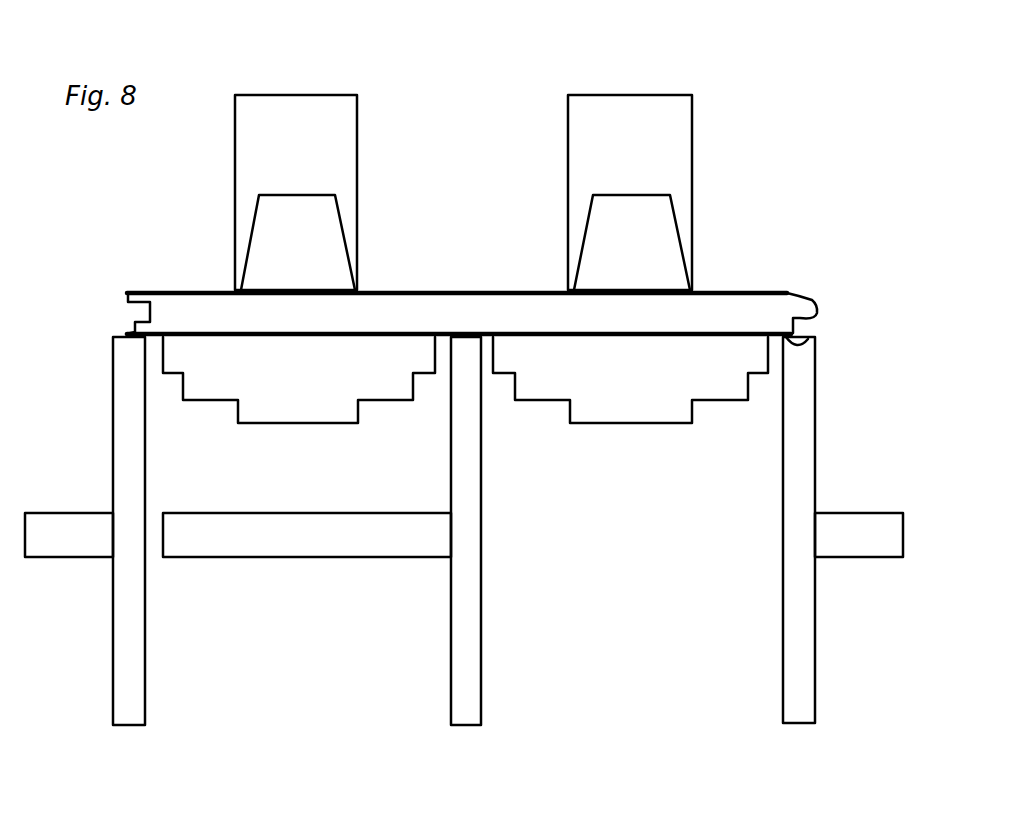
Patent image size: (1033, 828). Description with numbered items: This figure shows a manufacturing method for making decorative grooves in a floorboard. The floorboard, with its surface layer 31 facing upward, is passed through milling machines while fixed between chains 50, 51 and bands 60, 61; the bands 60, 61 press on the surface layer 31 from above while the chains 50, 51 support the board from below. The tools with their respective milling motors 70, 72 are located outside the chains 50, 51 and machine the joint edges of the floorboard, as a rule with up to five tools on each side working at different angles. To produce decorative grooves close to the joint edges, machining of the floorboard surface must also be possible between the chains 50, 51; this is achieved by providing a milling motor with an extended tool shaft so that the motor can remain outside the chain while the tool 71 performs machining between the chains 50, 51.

The surface layer 31 is at (808, 340).
The chain 50 is at (298, 392).
The chain 51 is at (590, 408).
The band 60 is at (318, 118).
The band 61 is at (629, 145).
The milling motor 70 is at (122, 708).
The tool 71 is at (456, 725).
The milling motor 72 is at (795, 707).